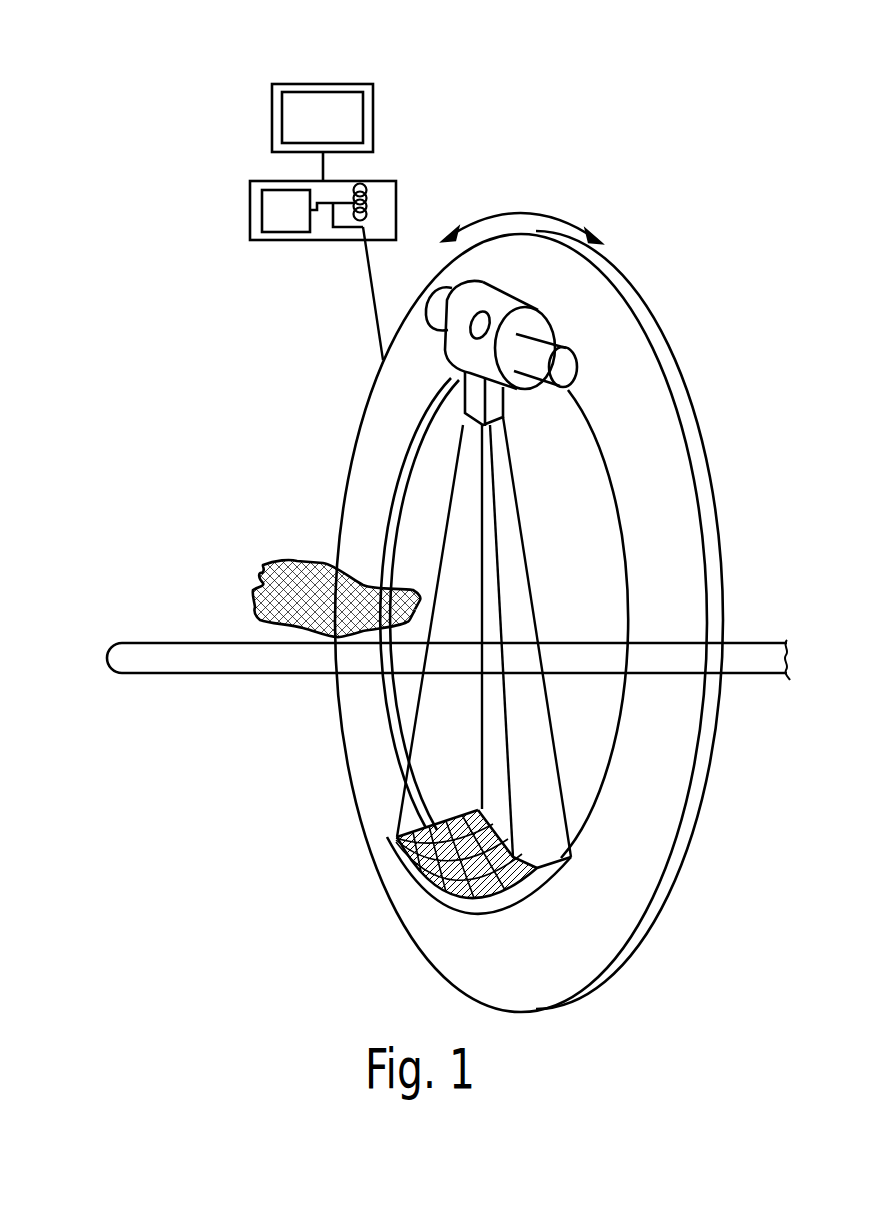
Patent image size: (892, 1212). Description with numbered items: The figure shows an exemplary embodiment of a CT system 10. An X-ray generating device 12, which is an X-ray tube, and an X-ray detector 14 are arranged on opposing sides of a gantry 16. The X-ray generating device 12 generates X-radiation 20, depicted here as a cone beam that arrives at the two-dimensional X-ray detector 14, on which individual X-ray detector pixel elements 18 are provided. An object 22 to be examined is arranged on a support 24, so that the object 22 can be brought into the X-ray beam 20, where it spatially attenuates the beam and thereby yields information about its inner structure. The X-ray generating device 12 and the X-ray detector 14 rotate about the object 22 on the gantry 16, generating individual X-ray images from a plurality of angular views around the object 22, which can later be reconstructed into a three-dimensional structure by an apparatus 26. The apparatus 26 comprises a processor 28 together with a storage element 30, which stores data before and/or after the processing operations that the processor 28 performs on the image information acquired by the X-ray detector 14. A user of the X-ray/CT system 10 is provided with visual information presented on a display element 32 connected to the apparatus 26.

The X-ray/CT system 10 is at (689, 68).
The X-ray generating device 12 is at (530, 297).
The X-ray detector 14 is at (420, 900).
The gantry 16 is at (697, 294).
The X-ray detector pixel elements 18 is at (400, 848).
The X-radiation 20 is at (462, 497).
The object 22 is at (262, 602).
The support 24 is at (122, 657).
The apparatus 26 is at (268, 168).
The processor 28 is at (258, 234).
The storage element 30 is at (359, 184).
The display element 32 is at (331, 105).